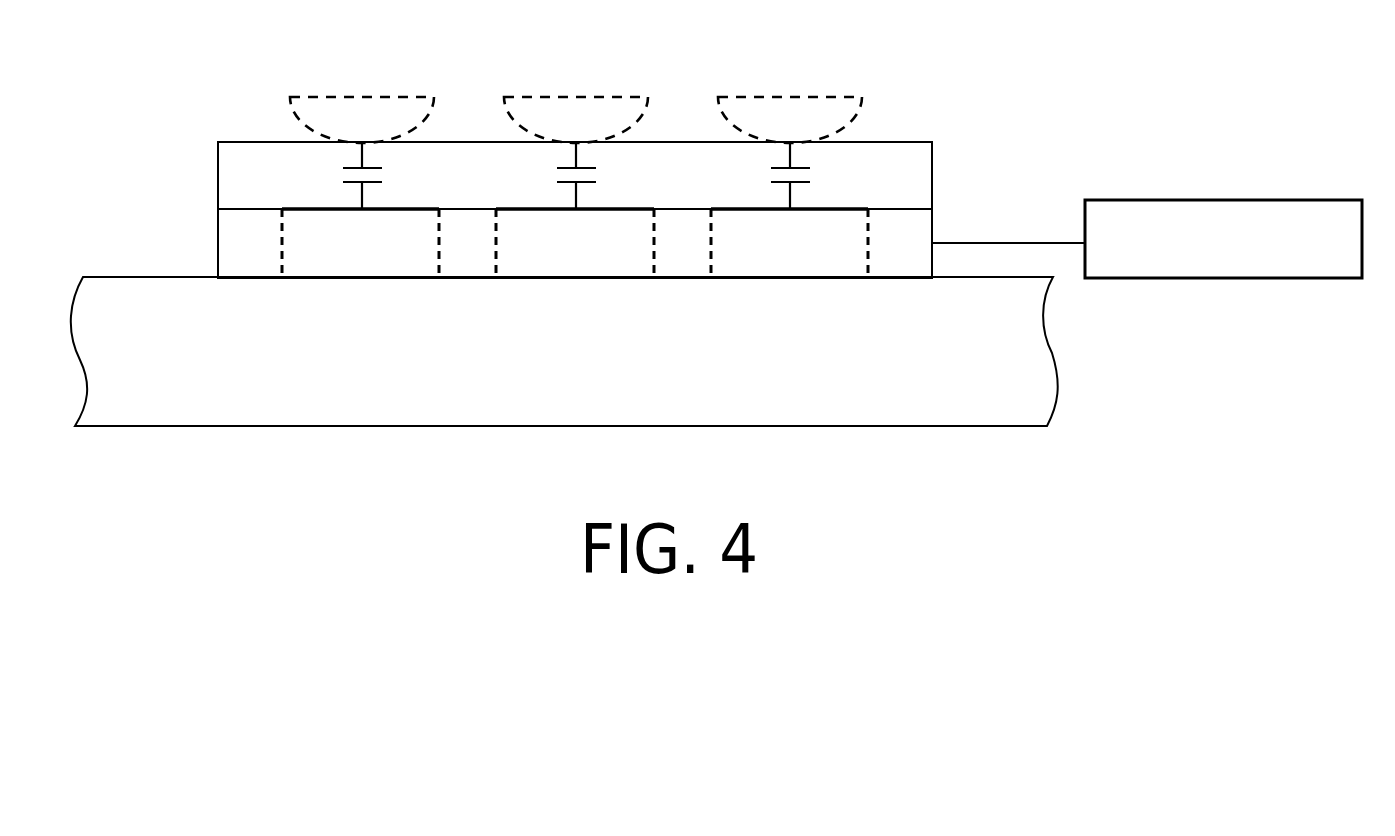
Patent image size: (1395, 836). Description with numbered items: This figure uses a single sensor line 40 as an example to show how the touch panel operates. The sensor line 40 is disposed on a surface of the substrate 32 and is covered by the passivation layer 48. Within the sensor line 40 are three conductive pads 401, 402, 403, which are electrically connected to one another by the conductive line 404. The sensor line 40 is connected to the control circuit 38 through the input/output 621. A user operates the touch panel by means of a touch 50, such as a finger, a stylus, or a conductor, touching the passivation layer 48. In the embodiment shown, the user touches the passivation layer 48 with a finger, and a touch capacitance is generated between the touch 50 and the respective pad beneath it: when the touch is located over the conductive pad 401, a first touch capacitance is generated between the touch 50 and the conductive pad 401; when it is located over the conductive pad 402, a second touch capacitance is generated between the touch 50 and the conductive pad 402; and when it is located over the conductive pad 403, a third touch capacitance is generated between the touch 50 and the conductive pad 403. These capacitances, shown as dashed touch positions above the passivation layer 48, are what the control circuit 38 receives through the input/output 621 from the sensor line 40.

The substrate 32 is at (1014, 411).
The control circuit 38 is at (1222, 200).
The sensor line 40 is at (938, 337).
The passivation layer 48 is at (243, 150).
The touch 50 is at (362, 102).
The conductive pad 401 is at (788, 267).
The conductive pad 402 is at (573, 267).
The conductive pad 403 is at (358, 267).
The conductive line 404 is at (258, 267).
The input/output 621 is at (1000, 243).